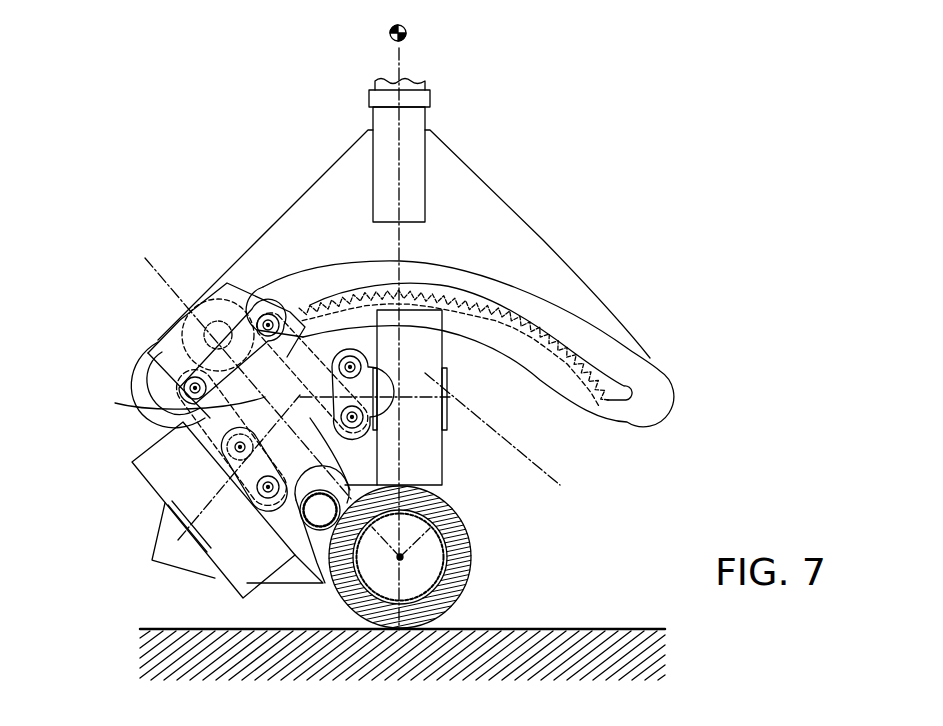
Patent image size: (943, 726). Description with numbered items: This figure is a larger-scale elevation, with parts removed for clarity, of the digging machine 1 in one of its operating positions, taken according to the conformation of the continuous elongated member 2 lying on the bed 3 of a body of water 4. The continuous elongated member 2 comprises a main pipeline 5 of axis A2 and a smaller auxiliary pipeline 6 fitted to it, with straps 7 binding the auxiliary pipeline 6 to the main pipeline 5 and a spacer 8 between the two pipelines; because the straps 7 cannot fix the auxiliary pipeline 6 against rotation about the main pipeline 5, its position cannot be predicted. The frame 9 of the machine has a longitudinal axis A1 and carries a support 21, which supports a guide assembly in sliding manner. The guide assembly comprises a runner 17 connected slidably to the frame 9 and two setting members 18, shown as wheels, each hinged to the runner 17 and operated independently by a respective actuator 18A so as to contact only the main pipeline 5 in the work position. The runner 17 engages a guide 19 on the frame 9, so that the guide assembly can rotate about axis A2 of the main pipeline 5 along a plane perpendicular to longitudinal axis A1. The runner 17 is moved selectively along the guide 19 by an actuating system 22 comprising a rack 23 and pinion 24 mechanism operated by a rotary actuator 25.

The longitudinal axis of frame A1 is at (407, 28).
The digging machine 1 is at (536, 163).
The frame 9 is at (310, 142).
The body of water 4 is at (491, 311).
The actuating system 22 is at (277, 283).
The rack 23 is at (475, 314).
The support 21 is at (557, 276).
The guide 19 is at (619, 366).
The setting member 18 is at (418, 452).
The actuator 18A is at (227, 284).
The pinion 24 is at (190, 326).
The rotary actuator 25 is at (176, 320).
The runner 17 is at (118, 404).
The spacer 8 is at (342, 397).
The strap 7 is at (337, 423).
The auxiliary pipeline 6 is at (323, 540).
The continuous elongated member 2 is at (480, 598).
The axis of main pipeline A2 is at (402, 555).
The main pipeline 5 is at (340, 607).
The bed 3 is at (573, 656).